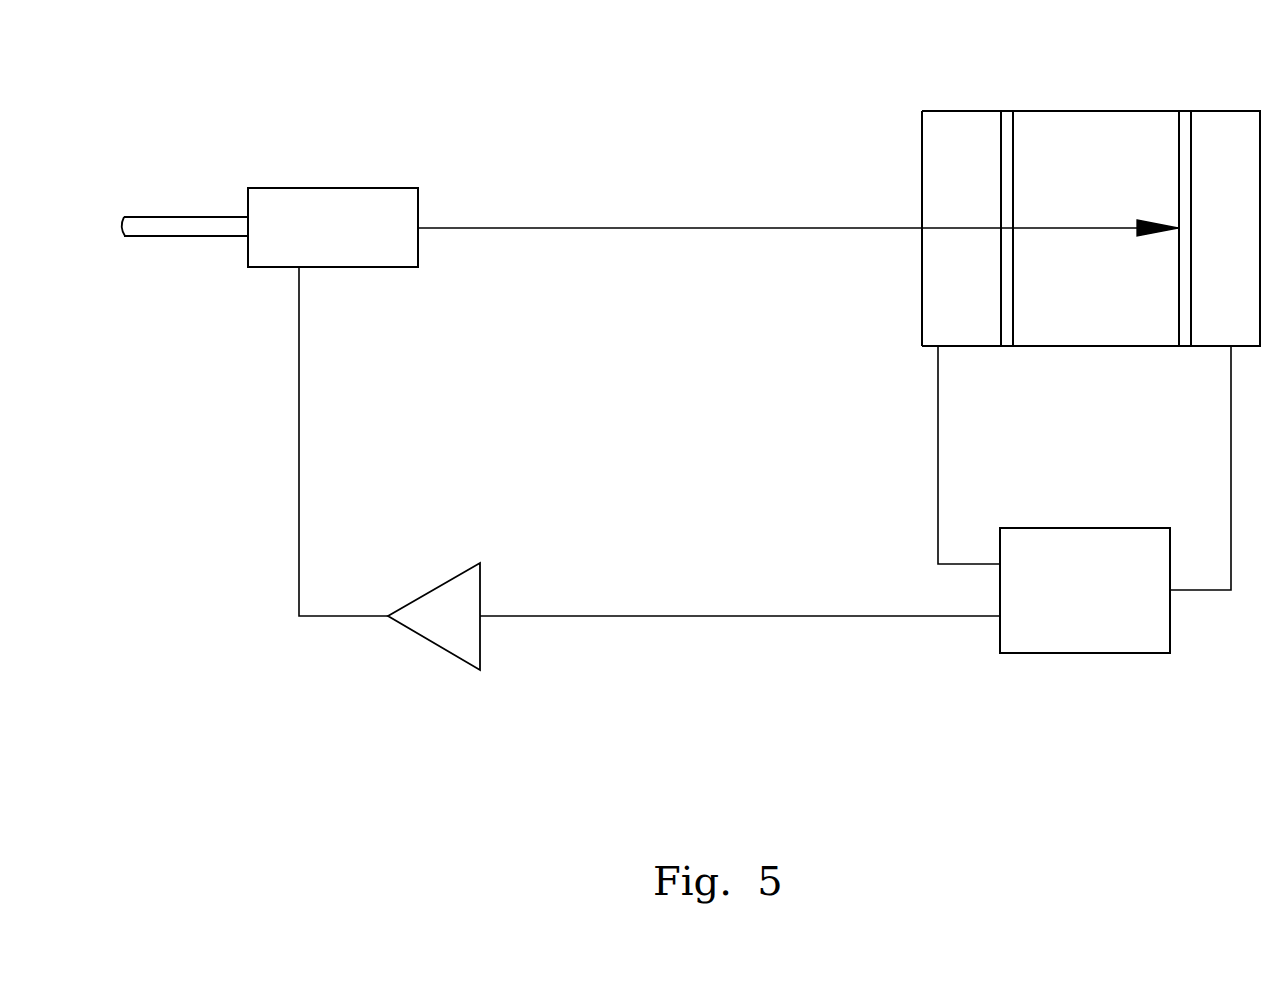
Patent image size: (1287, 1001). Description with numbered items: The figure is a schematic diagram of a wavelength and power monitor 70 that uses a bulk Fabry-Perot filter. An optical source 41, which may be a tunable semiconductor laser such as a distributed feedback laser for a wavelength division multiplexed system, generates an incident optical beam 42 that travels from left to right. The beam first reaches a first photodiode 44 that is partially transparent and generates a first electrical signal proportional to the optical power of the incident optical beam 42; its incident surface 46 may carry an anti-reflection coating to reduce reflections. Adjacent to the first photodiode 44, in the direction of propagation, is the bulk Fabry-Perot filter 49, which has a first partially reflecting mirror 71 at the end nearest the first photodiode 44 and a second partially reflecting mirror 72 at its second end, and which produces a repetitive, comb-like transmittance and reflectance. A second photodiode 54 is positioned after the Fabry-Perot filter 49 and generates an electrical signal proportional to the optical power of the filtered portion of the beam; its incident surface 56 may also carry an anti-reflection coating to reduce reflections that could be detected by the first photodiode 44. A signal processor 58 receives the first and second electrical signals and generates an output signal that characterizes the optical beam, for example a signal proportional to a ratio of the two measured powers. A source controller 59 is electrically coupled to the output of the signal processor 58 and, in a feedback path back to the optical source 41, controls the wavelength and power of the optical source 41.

The optical source 41 is at (326, 186).
The incident optical beam 42 is at (668, 226).
The first photodiode 44 is at (943, 133).
The incident surface 46 is at (919, 162).
The bulk Fabry-Perot filter 49 is at (1086, 106).
The second photodiode 54 is at (1202, 108).
The incident surface 56 is at (1189, 332).
The signal processor 58 is at (1025, 526).
The source controller 59 is at (475, 560).
The wavelength and power monitor 70 is at (1062, 226).
The first partially reflecting mirror 71 is at (1006, 114).
The second partially reflecting mirror 72 is at (1182, 114).